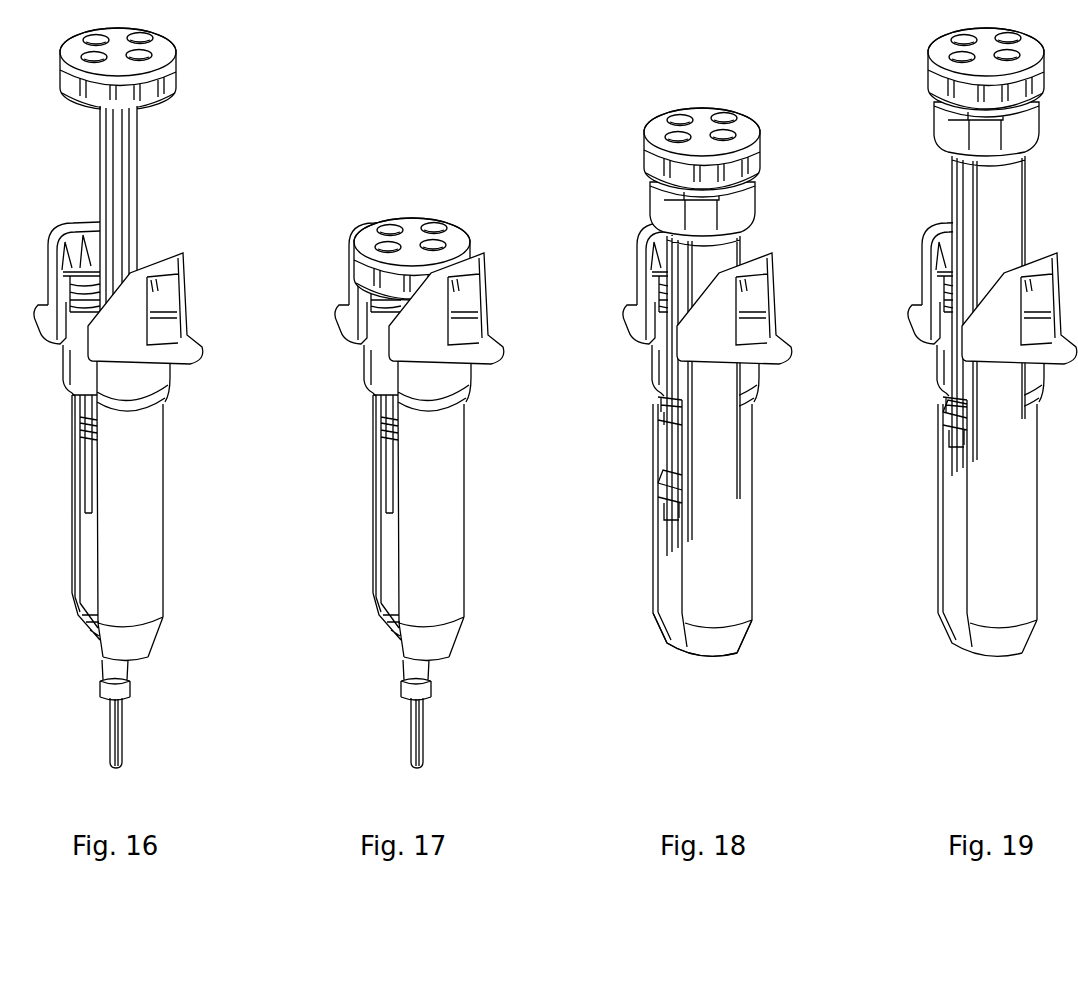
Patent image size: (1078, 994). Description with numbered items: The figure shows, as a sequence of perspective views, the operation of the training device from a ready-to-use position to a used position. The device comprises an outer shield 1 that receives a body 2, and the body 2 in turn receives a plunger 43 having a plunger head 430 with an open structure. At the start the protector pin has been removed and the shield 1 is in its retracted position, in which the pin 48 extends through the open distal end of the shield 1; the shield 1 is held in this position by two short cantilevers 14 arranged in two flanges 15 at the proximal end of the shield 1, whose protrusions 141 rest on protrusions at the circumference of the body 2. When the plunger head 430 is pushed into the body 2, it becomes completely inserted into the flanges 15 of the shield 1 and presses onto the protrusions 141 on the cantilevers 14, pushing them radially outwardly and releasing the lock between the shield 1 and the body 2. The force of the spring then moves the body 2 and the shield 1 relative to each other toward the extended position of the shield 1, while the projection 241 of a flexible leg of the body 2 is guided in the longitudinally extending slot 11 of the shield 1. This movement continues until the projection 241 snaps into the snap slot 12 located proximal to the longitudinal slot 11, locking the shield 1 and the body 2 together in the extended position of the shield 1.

In FIG. 16, the outer shield 1 is at (120, 535).
In FIG. 17, the outer shield 1 is at (420, 558).
In FIG. 18, the outer shield 1 is at (710, 514).
In FIG. 18, the body 2 is at (720, 217).
In FIG. 18, the longitudinally extending slot 11 is at (675, 562).
In FIG. 18, the snap slot 12 is at (667, 410).
In FIG. 19, the snap slot 12 is at (953, 403).
In FIG. 17, the cantilever 14 is at (460, 288).
In FIG. 17, the flange 15 is at (345, 317).
In FIG. 16, the plunger 43 is at (127, 202).
In FIG. 18, the plunger 43 is at (713, 185).
In FIG. 16, the pin 48 is at (122, 742).
In FIG. 18, the protrusion 141 is at (662, 265).
In FIG. 18, the projection 241 is at (672, 492).
In FIG. 19, the projection 241 is at (948, 412).
In FIG. 17, the plunger head 430 is at (415, 240).